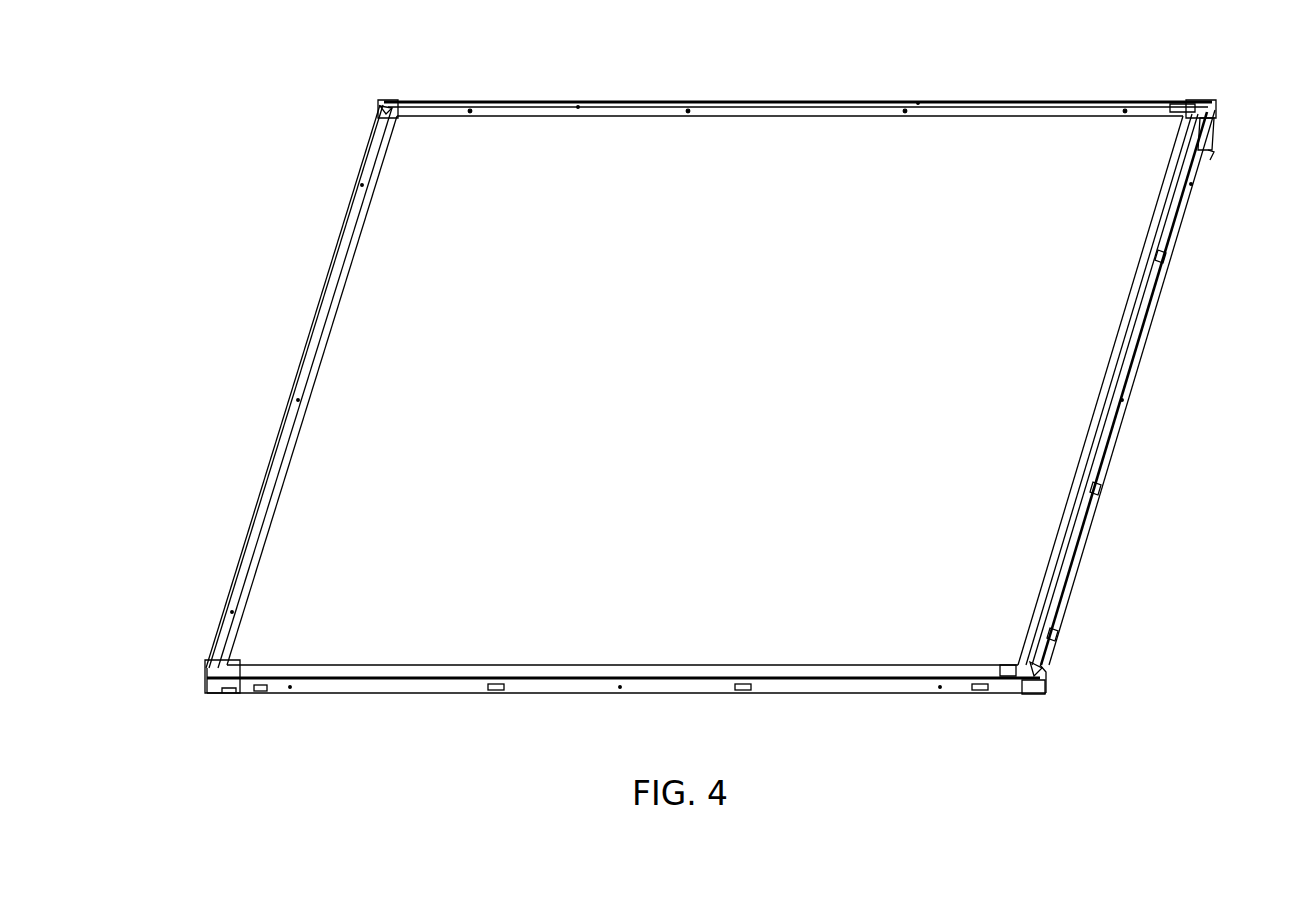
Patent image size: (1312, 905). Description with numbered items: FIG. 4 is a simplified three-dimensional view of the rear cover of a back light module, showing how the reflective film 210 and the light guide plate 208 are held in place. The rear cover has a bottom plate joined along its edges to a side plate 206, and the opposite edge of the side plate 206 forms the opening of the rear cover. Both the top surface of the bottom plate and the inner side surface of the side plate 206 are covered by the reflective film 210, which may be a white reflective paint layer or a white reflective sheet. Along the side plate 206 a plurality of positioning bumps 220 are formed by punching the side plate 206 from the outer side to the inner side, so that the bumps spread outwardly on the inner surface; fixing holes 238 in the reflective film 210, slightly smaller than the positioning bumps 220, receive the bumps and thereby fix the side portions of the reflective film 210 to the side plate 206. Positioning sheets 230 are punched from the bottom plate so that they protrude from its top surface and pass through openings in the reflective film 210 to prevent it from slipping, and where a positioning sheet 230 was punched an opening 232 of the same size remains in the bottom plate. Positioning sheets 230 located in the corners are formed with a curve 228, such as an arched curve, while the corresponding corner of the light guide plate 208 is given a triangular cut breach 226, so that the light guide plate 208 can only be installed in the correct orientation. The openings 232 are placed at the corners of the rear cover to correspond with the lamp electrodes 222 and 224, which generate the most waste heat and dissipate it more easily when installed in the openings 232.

The side plate 206 is at (796, 104).
The light guide plate 208 is at (1073, 446).
The reflective film 210 is at (386, 106).
The positioning bumps 220 is at (470, 110).
The electrode 222 is at (1182, 104).
The electrode 224 is at (1208, 122).
The cut breach 226 is at (1010, 680).
The curve 228 is at (1030, 692).
The positioning sheet 230 is at (1040, 674).
The opening 232 is at (1215, 140).
The fixing hole 238 is at (918, 102).